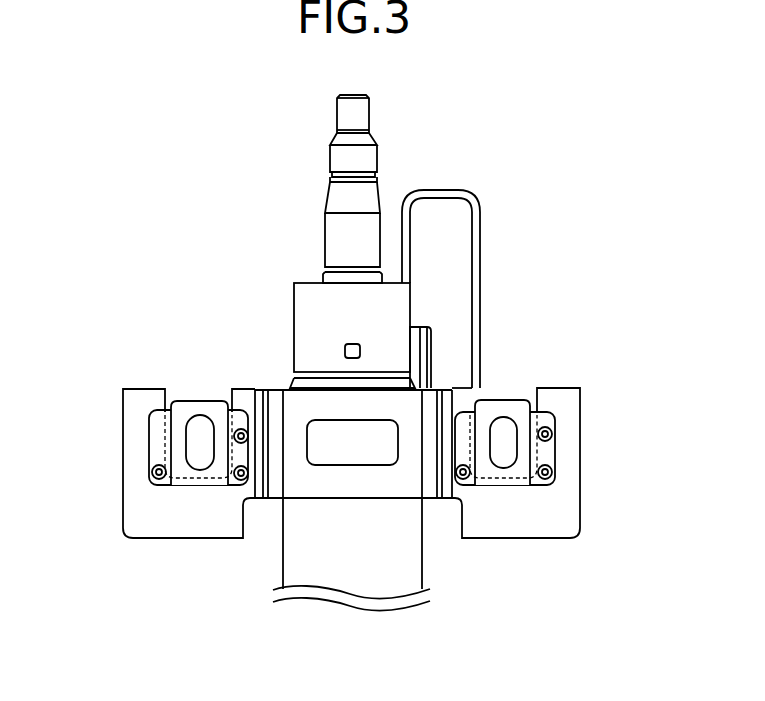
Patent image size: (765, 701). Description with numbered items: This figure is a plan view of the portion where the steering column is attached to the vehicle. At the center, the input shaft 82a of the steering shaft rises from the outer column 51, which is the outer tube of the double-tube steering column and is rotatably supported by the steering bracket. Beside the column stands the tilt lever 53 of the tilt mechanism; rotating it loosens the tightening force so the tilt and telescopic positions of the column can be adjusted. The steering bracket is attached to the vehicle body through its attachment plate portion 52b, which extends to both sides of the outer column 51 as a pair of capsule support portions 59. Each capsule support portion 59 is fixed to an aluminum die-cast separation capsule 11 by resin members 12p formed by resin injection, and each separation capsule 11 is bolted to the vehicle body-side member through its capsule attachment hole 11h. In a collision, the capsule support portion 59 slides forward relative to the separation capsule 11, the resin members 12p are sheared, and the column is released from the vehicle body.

The input shaft 82a is at (340, 243).
The outer column 51 is at (320, 303).
The tilt lever 53 is at (473, 280).
The capsule support portion 59 is at (573, 491).
The attachment plate portion 52b is at (392, 485).
The resin member 12p is at (152, 472).
The separation capsule 11 is at (187, 408).
The capsule attachment hole 11h is at (202, 420).